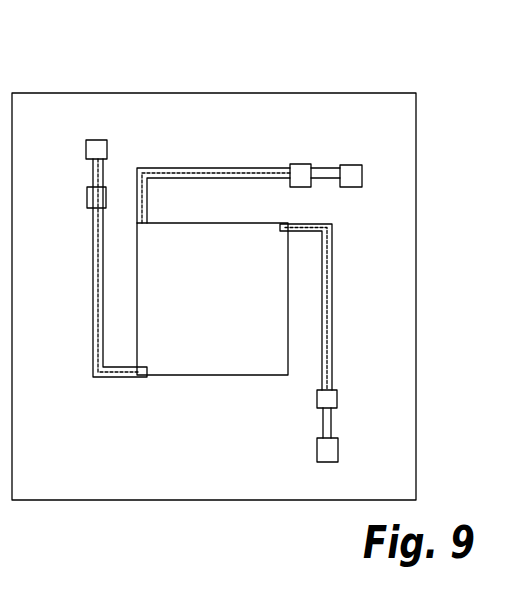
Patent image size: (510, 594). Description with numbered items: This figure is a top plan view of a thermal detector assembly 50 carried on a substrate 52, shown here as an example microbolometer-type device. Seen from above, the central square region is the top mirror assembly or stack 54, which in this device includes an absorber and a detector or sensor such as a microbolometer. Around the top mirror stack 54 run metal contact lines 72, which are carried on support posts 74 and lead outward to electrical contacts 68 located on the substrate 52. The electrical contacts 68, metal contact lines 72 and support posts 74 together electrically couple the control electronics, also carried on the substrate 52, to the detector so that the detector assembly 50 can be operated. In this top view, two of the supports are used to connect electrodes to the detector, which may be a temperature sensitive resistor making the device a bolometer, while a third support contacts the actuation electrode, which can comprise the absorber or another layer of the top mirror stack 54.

The thermal detector assembly 50 is at (199, 89).
The substrate 52 is at (416, 133).
The top mirror assembly or stack 54 is at (278, 311).
The electrical contacts 68 is at (97, 140).
The metal contact lines 72 is at (238, 172).
The support posts 74 is at (87, 195).